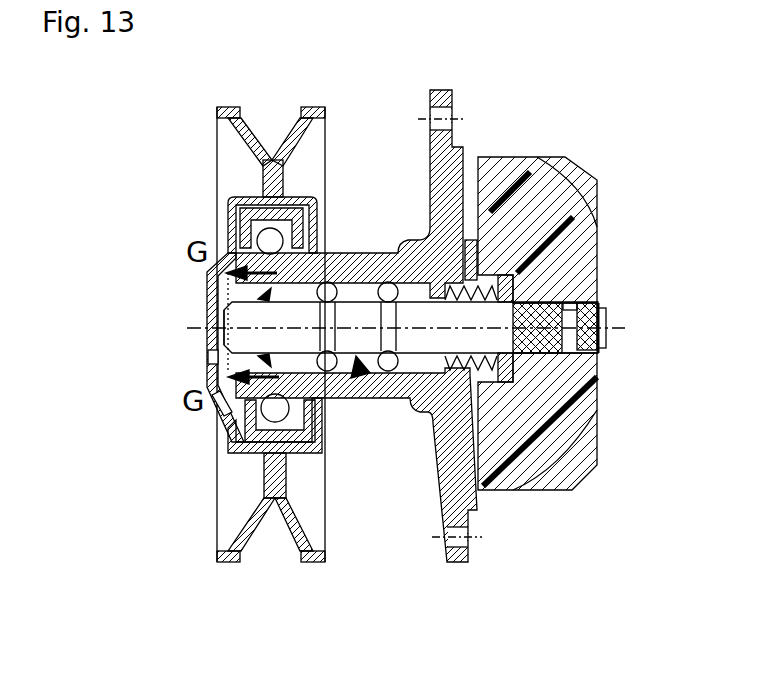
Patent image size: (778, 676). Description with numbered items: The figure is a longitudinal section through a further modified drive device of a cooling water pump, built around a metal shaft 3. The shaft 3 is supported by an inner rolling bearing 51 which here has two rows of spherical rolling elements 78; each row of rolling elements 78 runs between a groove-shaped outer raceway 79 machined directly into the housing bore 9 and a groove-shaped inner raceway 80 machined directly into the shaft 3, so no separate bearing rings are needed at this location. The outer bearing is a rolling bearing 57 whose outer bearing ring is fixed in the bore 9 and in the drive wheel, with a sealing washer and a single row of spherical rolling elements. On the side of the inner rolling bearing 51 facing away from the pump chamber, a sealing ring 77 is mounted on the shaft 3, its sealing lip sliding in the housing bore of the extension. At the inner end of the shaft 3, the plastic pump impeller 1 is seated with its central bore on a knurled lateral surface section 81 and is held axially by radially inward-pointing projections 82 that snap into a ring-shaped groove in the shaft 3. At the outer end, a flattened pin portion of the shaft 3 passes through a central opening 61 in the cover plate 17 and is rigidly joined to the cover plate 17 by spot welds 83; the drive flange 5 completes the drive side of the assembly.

The pump impeller 1 is at (583, 240).
The shaft 3 is at (455, 308).
The hub flange 5 is at (453, 150).
The housing bore 9 is at (207, 364).
The cover plate 17 is at (228, 240).
The inner rolling bearing 51 is at (365, 378).
The rolling bearing 57 is at (235, 447).
The central opening 61 is at (211, 322).
The sealing ring 77 is at (217, 403).
The spherical rolling elements 78 is at (357, 221).
The outer raceway 79 is at (328, 365).
The inner raceway 80 is at (389, 368).
The knurled lateral surface section 81 is at (532, 350).
The radially inward-pointing projections 82 is at (596, 387).
The spot welds 83 is at (222, 340).